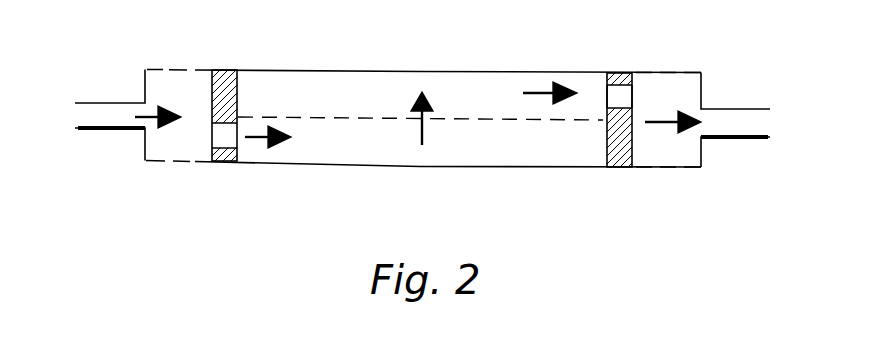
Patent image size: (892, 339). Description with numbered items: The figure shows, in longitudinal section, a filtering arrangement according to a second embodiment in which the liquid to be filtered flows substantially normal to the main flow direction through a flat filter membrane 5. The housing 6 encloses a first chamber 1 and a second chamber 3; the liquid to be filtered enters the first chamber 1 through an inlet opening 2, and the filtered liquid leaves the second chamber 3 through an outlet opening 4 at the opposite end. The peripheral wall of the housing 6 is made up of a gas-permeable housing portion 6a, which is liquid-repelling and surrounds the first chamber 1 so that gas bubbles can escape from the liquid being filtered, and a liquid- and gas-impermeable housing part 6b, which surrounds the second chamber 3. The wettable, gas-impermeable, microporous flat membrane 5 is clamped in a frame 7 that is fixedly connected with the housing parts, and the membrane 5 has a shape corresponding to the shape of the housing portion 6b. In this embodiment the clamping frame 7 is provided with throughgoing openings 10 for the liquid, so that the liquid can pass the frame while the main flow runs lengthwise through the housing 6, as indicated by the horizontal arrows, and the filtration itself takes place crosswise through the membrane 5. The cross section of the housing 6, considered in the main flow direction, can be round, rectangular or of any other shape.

The first chamber 1 is at (290, 158).
The inlet opening 2 is at (126, 107).
The second chamber 3 is at (599, 128).
The outlet pipe 4 is at (725, 118).
The flat membrane 5 is at (323, 117).
The housing 6 is at (423, 122).
The gas-permeable housing portion 6a is at (213, 39).
The liquid- and gas-impermeable housing part 6b is at (465, 42).
The clamping frame 7 is at (603, 167).
The throughgoing openings 10 is at (615, 98).